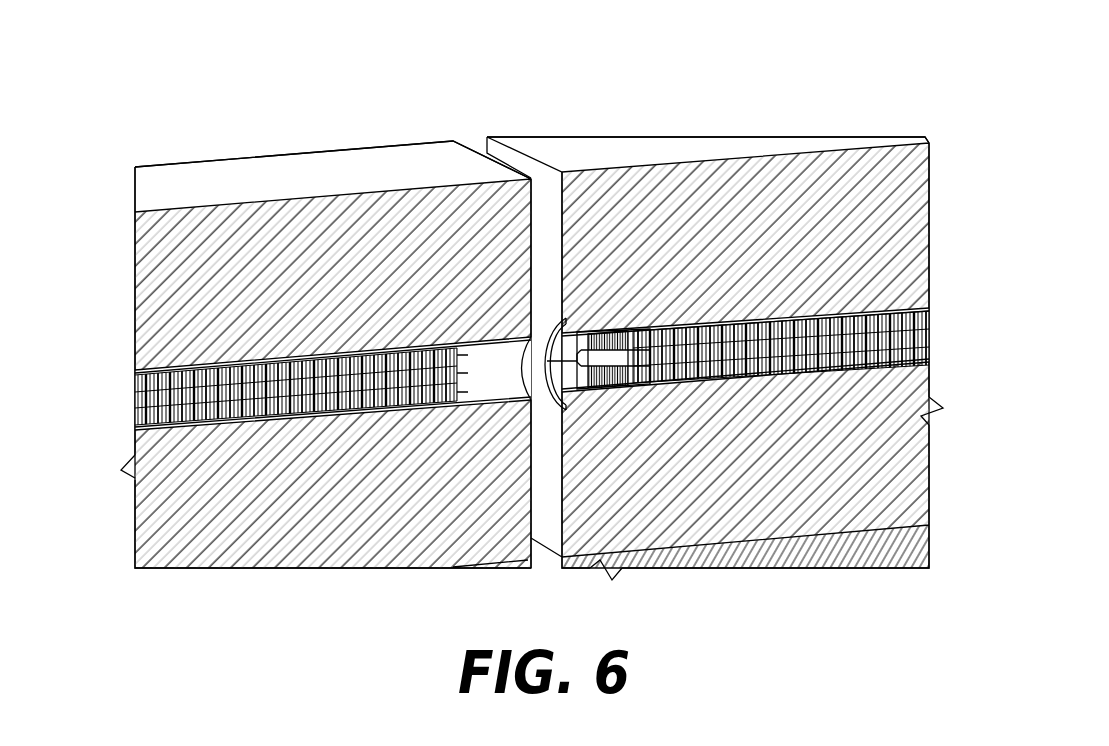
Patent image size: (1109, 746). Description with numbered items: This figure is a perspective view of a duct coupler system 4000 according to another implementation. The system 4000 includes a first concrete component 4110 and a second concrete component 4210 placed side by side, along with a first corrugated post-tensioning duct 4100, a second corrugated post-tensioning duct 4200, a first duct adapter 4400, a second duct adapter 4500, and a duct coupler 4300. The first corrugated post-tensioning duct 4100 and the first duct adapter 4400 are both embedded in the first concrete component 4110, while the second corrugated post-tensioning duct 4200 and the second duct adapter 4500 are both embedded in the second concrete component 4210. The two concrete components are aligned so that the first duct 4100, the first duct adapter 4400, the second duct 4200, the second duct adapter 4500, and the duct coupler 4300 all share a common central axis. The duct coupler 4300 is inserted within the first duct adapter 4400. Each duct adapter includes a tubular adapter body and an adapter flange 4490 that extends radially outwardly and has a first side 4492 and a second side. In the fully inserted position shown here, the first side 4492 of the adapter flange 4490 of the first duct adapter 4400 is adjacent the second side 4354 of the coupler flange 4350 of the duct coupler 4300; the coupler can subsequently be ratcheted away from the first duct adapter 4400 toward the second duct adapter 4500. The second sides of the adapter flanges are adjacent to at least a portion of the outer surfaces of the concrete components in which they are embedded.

The duct coupler system 4000 is at (638, 86).
The first corrugated post-tensioning duct 4100 is at (173, 367).
The first concrete component 4110 is at (325, 535).
The second corrugated post-tensioning duct 4200 is at (872, 310).
The second concrete component 4210 is at (820, 507).
The duct coupler 4300 is at (555, 410).
The coupler flange 4350 is at (553, 517).
The second side of the coupler flange 4354 is at (542, 325).
The first duct adapter 4400 is at (533, 337).
The adapter flange 4490 is at (528, 284).
The first side of the adapter flange 4492 is at (520, 407).
The second duct adapter 4500 is at (615, 330).